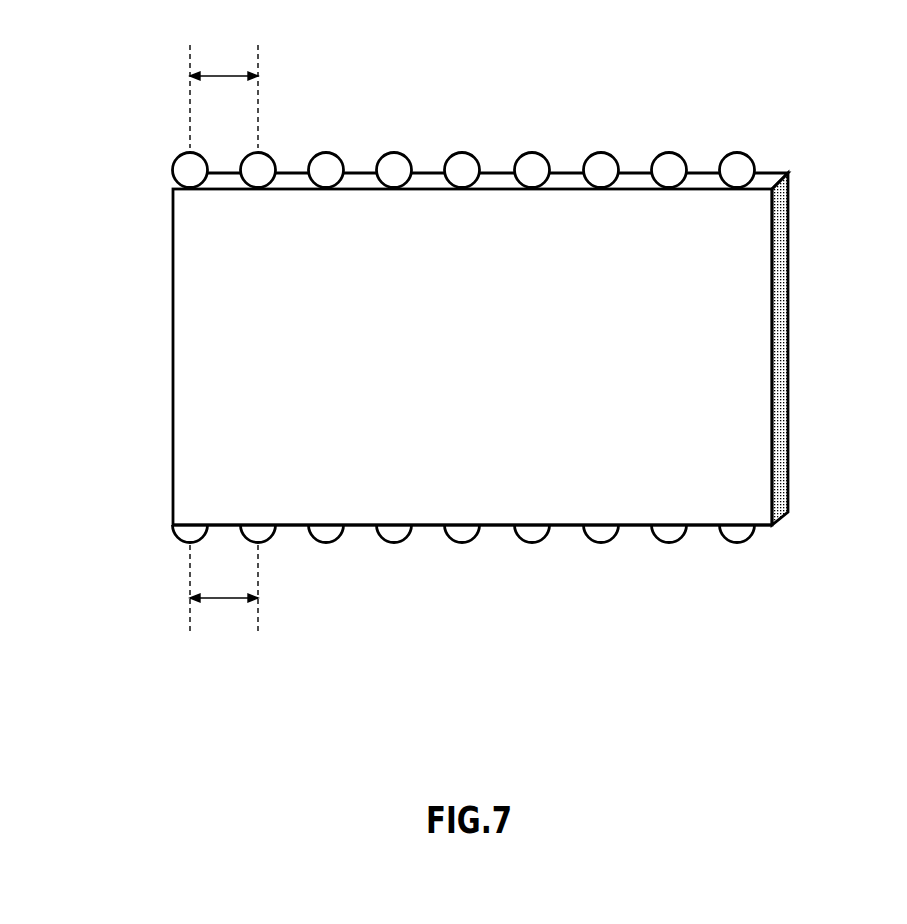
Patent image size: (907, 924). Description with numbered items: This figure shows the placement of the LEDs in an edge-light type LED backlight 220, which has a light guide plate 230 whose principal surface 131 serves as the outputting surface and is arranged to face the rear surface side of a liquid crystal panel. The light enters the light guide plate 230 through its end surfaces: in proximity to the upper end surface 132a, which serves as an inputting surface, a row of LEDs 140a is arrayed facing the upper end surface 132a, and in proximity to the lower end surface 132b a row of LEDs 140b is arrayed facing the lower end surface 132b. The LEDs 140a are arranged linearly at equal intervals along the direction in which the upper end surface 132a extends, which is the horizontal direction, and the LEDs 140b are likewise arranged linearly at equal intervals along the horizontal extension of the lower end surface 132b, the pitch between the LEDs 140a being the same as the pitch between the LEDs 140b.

The LED backlight 220 is at (480, 318).
The principal surface 131 is at (183, 268).
The upper end surface 132a is at (570, 181).
The lower end surface 132b is at (604, 526).
The LEDs 140a is at (673, 153).
The LEDs 140b is at (400, 537).
The light guide plate 230 is at (789, 373).